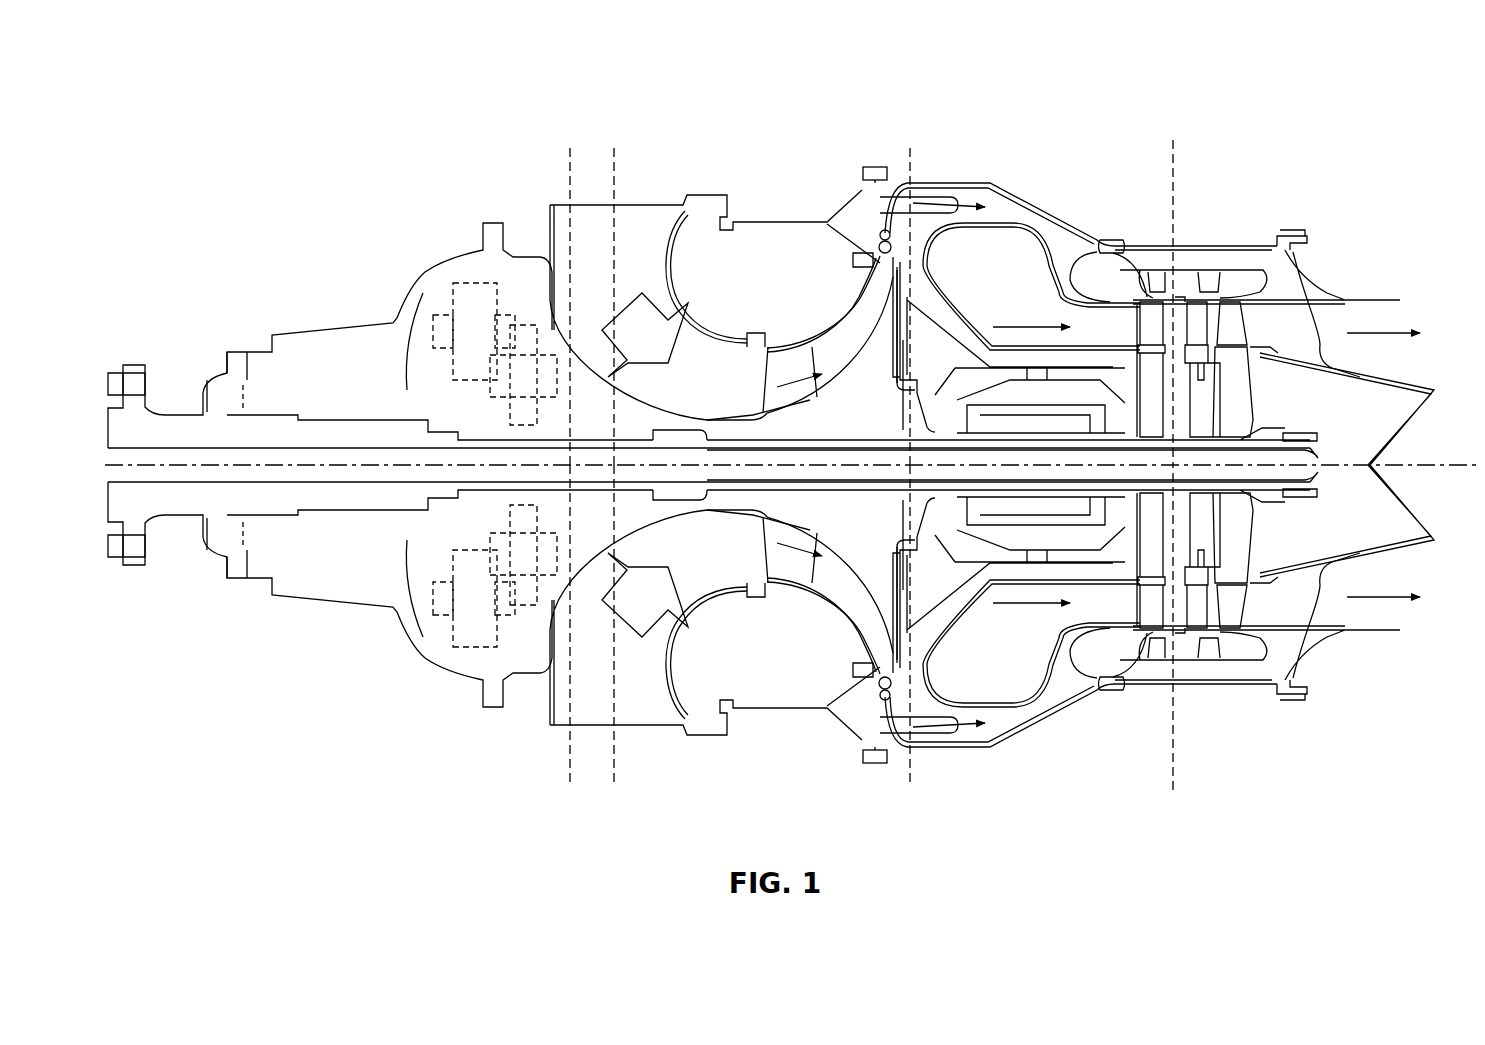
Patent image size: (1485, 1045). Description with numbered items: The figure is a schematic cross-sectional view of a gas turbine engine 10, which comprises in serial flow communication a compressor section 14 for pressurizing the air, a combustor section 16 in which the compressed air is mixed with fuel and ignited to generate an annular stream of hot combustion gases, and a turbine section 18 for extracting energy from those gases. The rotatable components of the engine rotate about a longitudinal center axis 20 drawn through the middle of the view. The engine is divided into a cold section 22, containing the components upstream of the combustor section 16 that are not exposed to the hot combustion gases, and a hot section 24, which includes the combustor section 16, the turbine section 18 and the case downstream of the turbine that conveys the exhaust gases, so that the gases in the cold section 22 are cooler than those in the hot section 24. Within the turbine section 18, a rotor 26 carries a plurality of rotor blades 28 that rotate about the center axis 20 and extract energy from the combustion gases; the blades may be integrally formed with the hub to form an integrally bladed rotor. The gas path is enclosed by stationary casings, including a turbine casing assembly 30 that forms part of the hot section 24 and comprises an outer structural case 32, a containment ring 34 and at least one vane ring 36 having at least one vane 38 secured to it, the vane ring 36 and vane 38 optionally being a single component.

The gas turbine engine 10 is at (1318, 108).
The compressor section 14 is at (657, 742).
The combustor section 16 is at (987, 762).
The turbine section 18 is at (1195, 702).
The longitudinal center axis 20 is at (362, 466).
The cold section 22 is at (783, 748).
The hot section 24 is at (1113, 705).
The rotor 26 is at (1243, 378).
The rotor blades 28 is at (1190, 310).
The turbine casing assembly 30 is at (1310, 709).
The outer structural case 32 is at (1233, 690).
The containment ring 34 is at (1186, 274).
The vane ring 36 is at (1157, 294).
The vane 38 is at (1095, 238).